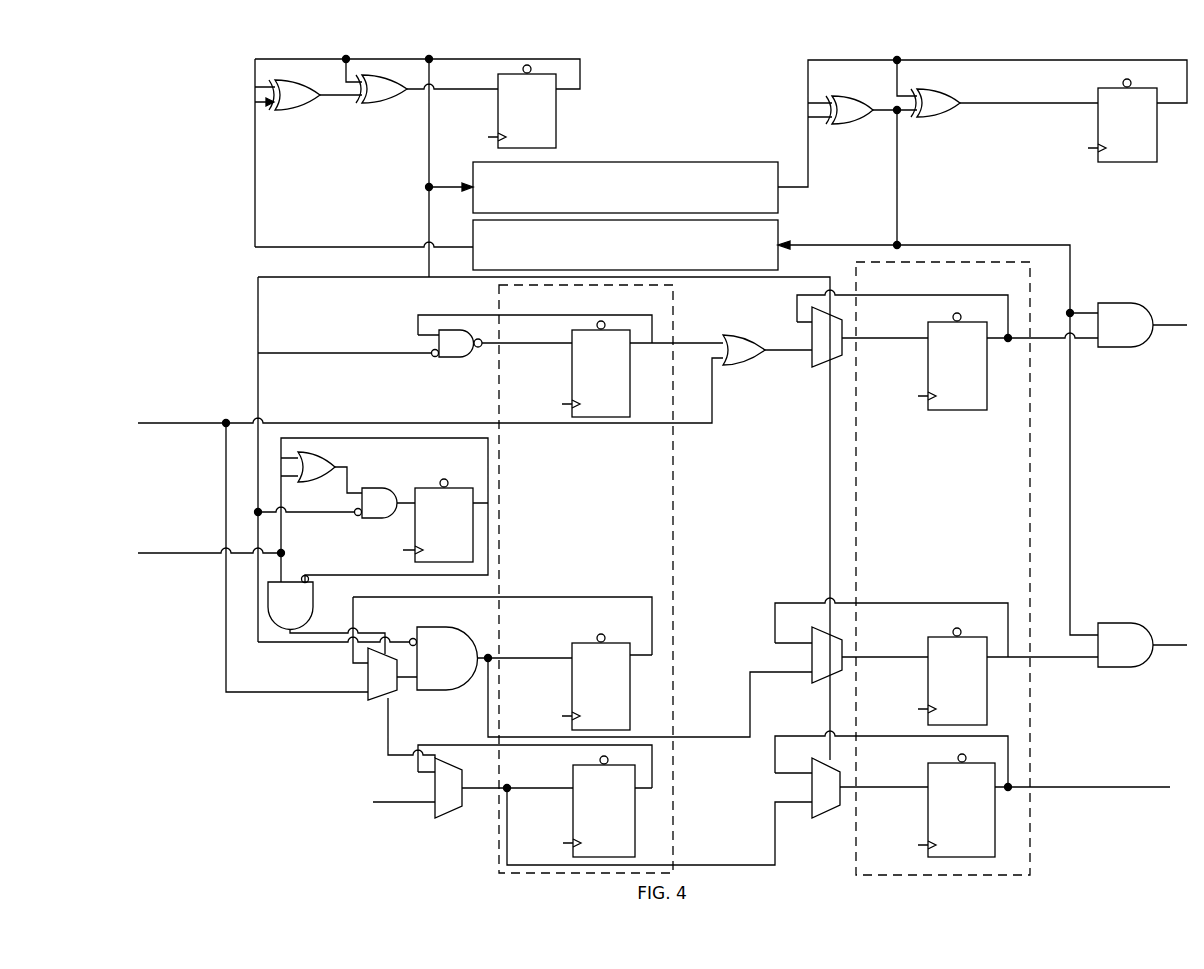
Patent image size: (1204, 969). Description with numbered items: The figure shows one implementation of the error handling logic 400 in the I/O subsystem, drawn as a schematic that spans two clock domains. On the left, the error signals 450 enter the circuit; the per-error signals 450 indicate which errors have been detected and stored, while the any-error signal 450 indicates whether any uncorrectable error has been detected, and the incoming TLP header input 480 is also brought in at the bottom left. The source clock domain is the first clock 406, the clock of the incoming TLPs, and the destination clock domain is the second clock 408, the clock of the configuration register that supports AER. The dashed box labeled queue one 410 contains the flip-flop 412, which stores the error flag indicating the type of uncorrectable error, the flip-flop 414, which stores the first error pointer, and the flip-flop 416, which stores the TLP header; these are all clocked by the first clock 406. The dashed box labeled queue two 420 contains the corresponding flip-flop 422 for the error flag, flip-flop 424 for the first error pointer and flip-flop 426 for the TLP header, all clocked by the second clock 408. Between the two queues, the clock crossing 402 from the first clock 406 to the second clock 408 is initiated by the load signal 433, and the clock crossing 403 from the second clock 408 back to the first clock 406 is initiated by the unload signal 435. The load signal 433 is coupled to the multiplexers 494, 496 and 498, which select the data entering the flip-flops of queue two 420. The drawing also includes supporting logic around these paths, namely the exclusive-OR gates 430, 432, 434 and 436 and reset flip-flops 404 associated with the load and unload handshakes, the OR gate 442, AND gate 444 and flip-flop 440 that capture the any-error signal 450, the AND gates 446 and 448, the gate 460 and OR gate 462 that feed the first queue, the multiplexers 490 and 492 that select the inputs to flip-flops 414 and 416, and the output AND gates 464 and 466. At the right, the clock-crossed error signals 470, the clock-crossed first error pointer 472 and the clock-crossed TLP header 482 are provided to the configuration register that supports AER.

The error handling logic 400 is at (162, 893).
The clock crossing 402 is at (625, 187).
The clock crossing 403 is at (625, 245).
The flip-flop 404 is at (748, 313).
The clock 1 (CLK1) 406 is at (446, 484).
The CLK2 408 is at (975, 491).
The queue 1 410 is at (586, 579).
The flip-flop 412 is at (596, 369).
The flip-flop 414 is at (596, 682).
The flip-flop 416 is at (599, 806).
The queue 2 420 is at (943, 568).
The flip-flop 422 is at (952, 361).
The flip-flop 424 is at (952, 676).
The flip-flop 426 is at (956, 805).
The XOR gate 430 is at (294, 106).
The XOR gate 432 is at (381, 100).
The load signal 433 is at (430, 220).
The XOR gate 434 is at (849, 122).
The unload signal 435 is at (837, 230).
The XOR gate 436 is at (935, 114).
The flip-flop 440 is at (444, 529).
The OR gate 442 is at (316, 478).
The AND gate 444 is at (379, 503).
The AND gate 446 is at (447, 658).
The AND gate 448 is at (290, 606).
The any_err / err[n:0] signals 450 is at (178, 461).
The NAND gate 460 is at (457, 343).
The OR gate 462 is at (744, 361).
The AND gate 464 is at (1125, 325).
The AND gate 466 is at (1125, 645).
The clock-crossed err[n:0] 470 is at (1145, 277).
The fep_err 472 is at (1145, 597).
The tlp_header input 480 is at (336, 801).
The tlp_header[127:0] 482 is at (1110, 788).
The multiplexer 490 is at (385, 700).
The multiplexer 492 is at (432, 818).
The multiplexer 494 is at (812, 362).
The multiplexer 496 is at (812, 683).
The multiplexer 498 is at (812, 818).